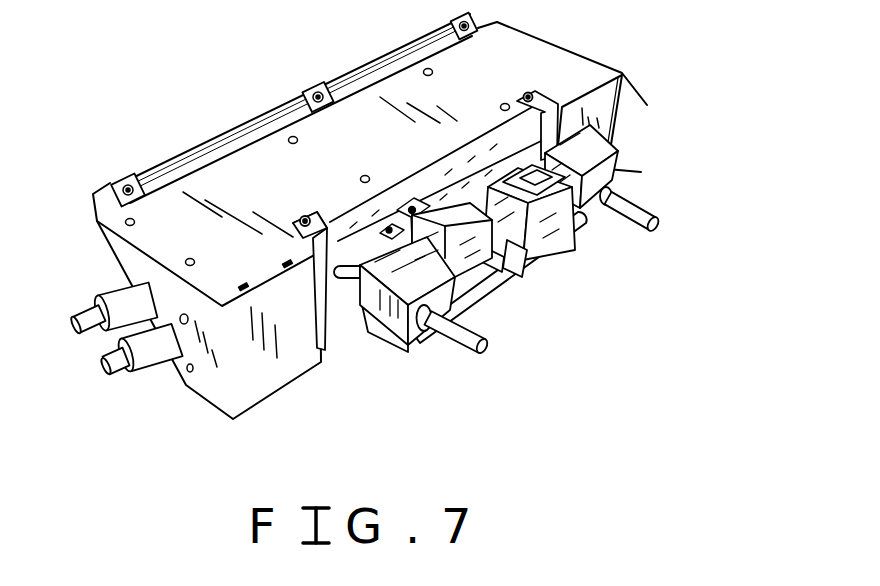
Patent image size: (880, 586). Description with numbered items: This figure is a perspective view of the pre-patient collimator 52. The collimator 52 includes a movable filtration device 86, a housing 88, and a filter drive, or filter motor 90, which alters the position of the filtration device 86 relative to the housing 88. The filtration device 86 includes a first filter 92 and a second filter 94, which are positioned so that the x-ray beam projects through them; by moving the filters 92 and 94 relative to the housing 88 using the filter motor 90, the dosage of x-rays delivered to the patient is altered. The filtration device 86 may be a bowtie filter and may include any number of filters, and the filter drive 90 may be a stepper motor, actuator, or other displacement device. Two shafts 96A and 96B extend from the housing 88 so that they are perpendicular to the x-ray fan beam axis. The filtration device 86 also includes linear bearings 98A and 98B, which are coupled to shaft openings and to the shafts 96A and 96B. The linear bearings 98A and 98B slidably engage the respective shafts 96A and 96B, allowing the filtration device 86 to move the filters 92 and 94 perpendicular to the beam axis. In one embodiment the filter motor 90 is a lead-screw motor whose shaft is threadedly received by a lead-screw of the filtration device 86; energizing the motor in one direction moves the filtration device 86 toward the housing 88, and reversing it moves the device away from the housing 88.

The pre-patient collimator 52 is at (208, 95).
The movable filtration device 86 is at (555, 277).
The housing 88 is at (620, 106).
The filter motor 90 is at (515, 267).
The first filter 92 is at (517, 267).
The second filter 94 is at (525, 265).
The shaft 96A is at (486, 356).
The shaft 96B is at (653, 213).
The linear bearing 98A is at (398, 313).
The linear bearing 98B is at (615, 178).